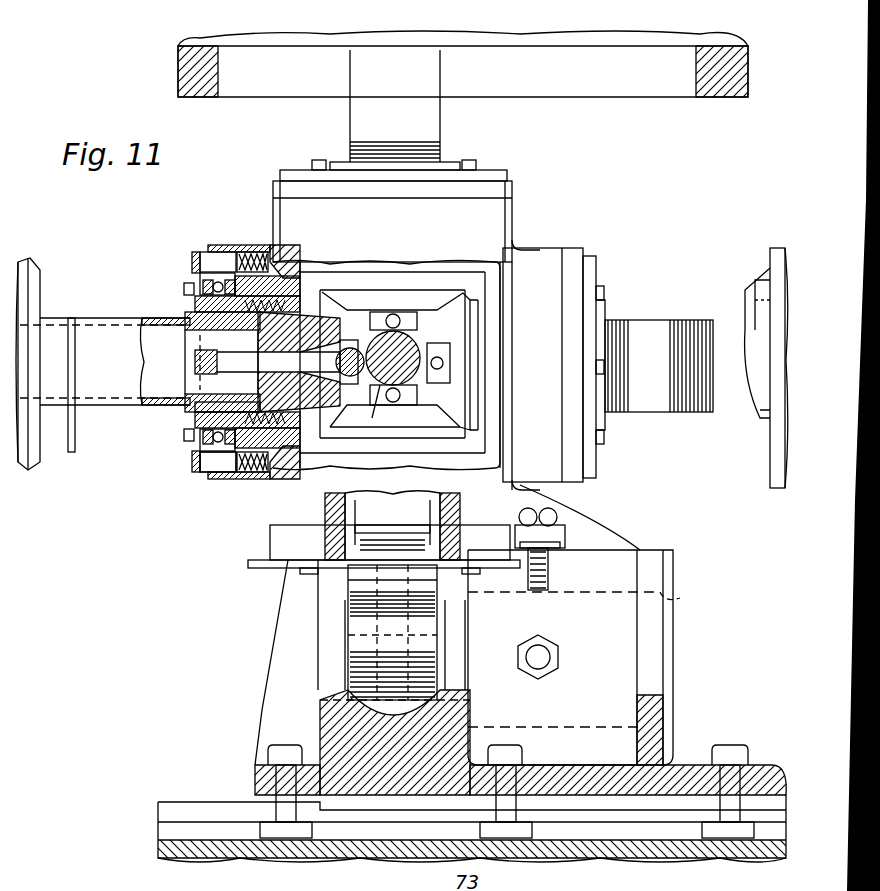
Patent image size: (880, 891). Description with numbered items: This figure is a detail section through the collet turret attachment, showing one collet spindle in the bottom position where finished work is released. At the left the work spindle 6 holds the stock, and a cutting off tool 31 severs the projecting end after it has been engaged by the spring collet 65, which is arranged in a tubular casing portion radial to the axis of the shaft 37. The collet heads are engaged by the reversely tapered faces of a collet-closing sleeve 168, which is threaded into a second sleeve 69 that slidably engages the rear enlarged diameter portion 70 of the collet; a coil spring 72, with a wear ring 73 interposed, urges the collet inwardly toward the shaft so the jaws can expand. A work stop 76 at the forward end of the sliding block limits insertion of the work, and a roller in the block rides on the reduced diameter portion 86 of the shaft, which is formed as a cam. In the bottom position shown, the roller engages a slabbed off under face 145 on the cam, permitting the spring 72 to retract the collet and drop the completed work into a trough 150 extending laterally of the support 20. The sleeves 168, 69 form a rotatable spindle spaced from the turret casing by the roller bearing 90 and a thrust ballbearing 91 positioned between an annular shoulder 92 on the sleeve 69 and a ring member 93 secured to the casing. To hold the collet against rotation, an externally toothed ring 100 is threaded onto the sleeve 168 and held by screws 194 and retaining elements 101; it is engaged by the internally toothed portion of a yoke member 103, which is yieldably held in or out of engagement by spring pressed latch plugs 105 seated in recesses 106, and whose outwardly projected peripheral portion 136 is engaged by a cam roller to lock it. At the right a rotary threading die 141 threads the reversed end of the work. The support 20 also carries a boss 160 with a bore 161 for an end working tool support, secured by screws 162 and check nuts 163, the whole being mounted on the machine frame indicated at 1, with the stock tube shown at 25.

The top support beam 1 is at (736, 97).
The work spindle 6 is at (30, 262).
The support 20 is at (665, 730).
The tube 25 is at (165, 318).
The cutting off tool 31 is at (68, 450).
The shaft 37 is at (378, 331).
The spring collet 65 is at (185, 338).
The second sleeve 69 is at (343, 338).
The rear enlarged diameter portion 70 is at (352, 347).
The coil spring 72 is at (285, 278).
The wear ring 73 is at (238, 245).
The work stop 76 is at (452, 518).
The reduced diameter portion 86 is at (430, 343).
The roller bearing 90 is at (318, 262).
The thrust ballbearing 91 is at (238, 252).
The annular shoulder 92 is at (250, 252).
The ring member 93 is at (196, 252).
The externally toothed ring 100 is at (208, 280).
The retaining elements 101 is at (195, 428).
The yoke member 103 is at (196, 260).
The spring pressed latch plugs 105 is at (215, 480).
The recesses 106 is at (275, 244).
The outwardly projected peripheral portion 136 is at (598, 415).
The rotary threading die 141 is at (745, 330).
The slabbed off under face 145 is at (383, 404).
The trough 150 is at (458, 690).
The boss 160 is at (640, 550).
The bore 161 is at (680, 598).
The screws 162 is at (528, 578).
The check nuts 163 is at (565, 530).
The collet-closing sleeve 168 is at (212, 437).
The screws 194 is at (184, 287).